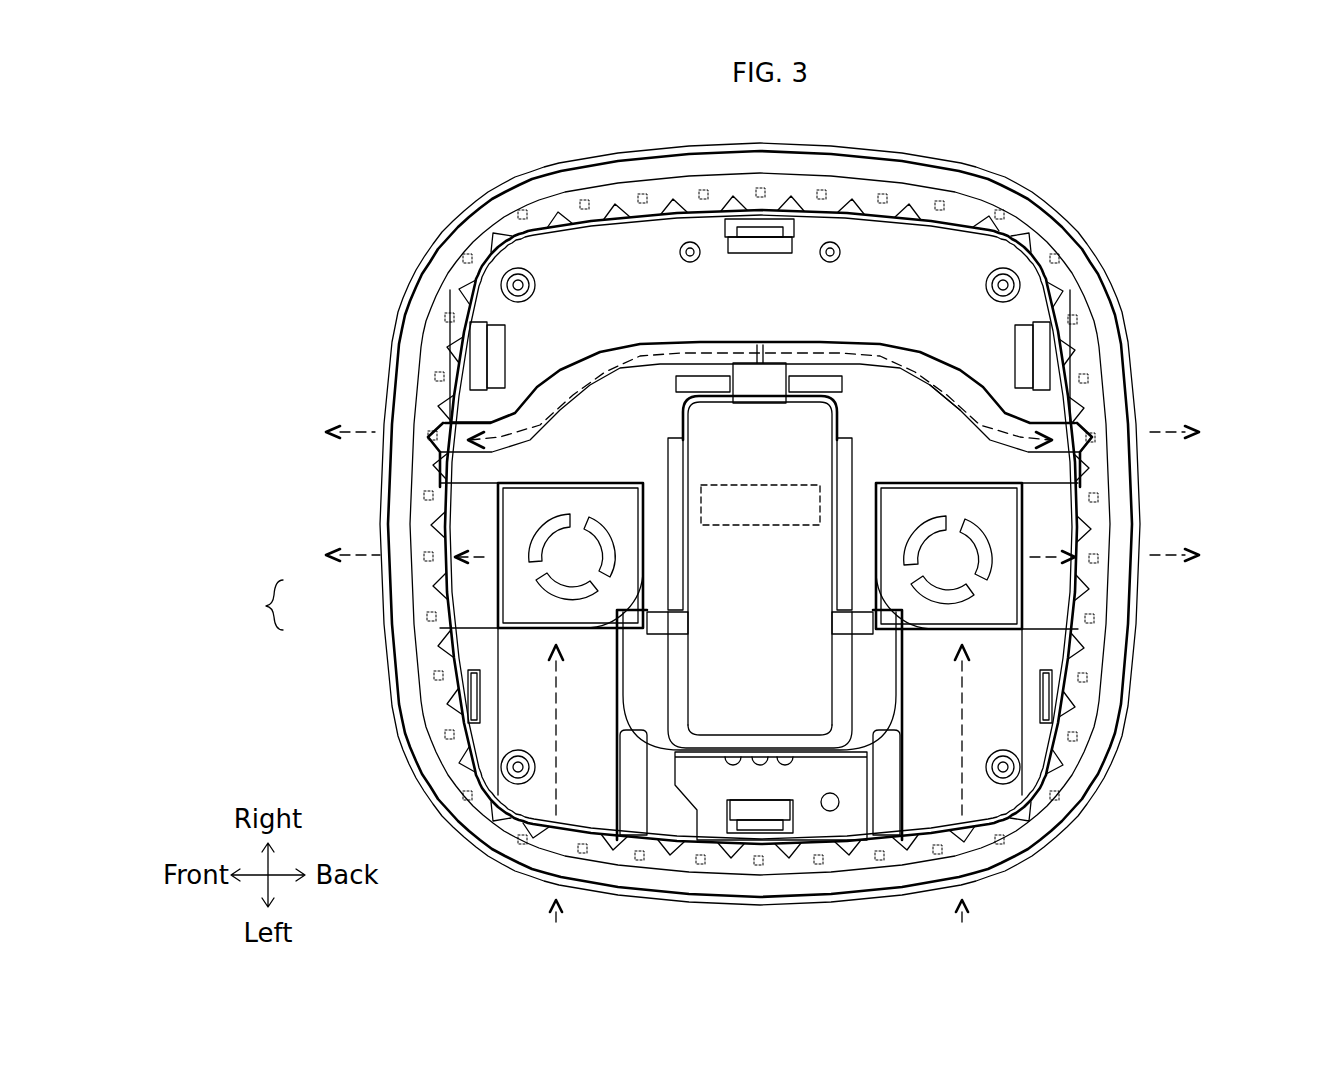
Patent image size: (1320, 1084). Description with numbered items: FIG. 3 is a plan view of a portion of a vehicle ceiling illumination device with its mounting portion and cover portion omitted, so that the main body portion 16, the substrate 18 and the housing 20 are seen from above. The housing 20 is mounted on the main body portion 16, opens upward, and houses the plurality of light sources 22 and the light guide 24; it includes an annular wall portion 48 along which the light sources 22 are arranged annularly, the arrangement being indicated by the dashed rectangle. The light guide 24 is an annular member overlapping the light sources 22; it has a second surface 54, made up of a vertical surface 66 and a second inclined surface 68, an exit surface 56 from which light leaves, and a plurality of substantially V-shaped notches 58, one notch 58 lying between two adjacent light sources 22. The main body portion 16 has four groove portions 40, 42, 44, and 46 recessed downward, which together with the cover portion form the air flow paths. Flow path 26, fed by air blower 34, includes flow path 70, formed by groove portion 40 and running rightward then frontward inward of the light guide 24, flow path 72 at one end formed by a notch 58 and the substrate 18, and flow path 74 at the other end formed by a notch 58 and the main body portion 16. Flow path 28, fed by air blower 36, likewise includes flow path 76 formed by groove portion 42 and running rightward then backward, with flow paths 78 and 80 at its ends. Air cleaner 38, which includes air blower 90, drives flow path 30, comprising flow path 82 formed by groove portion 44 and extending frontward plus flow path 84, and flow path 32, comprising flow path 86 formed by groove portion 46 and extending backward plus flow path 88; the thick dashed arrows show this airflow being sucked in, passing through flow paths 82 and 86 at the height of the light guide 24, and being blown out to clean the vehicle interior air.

The main body portion 16 is at (461, 657).
The substrate 18 is at (510, 820).
The housing 20 is at (394, 296).
The light sources 22 is at (428, 527).
The light guide 24 is at (374, 521).
The flow path 26 is at (535, 720).
The flow path 28 is at (984, 718).
The flow path 30 is at (555, 368).
The flow path 32 is at (970, 381).
The air blower 34 is at (468, 703).
The air blower 36 is at (1050, 703).
The air cleaner 38 is at (795, 695).
The groove portion 40 is at (628, 772).
The groove portion 42 is at (900, 778).
The groove portion 44 is at (532, 403).
The groove portion 46 is at (1095, 400).
The wall portion 48 is at (408, 332).
The second surface 54 is at (259, 605).
The exit surface 56 is at (405, 632).
The notches 58 is at (432, 500).
The vertical surface 66 is at (410, 603).
The second inclined surface 68 is at (410, 576).
The flow path 70 is at (548, 740).
The flow path 72 is at (540, 833).
The flow path 74 is at (430, 488).
The flow path 76 is at (978, 745).
The flow path 78 is at (975, 835).
The flow path 80 is at (1095, 490).
The flow path 82 is at (610, 362).
The flow path 84 is at (436, 427).
The flow path 86 is at (910, 362).
The flow path 88 is at (1090, 427).
The air blower 90 is at (720, 512).